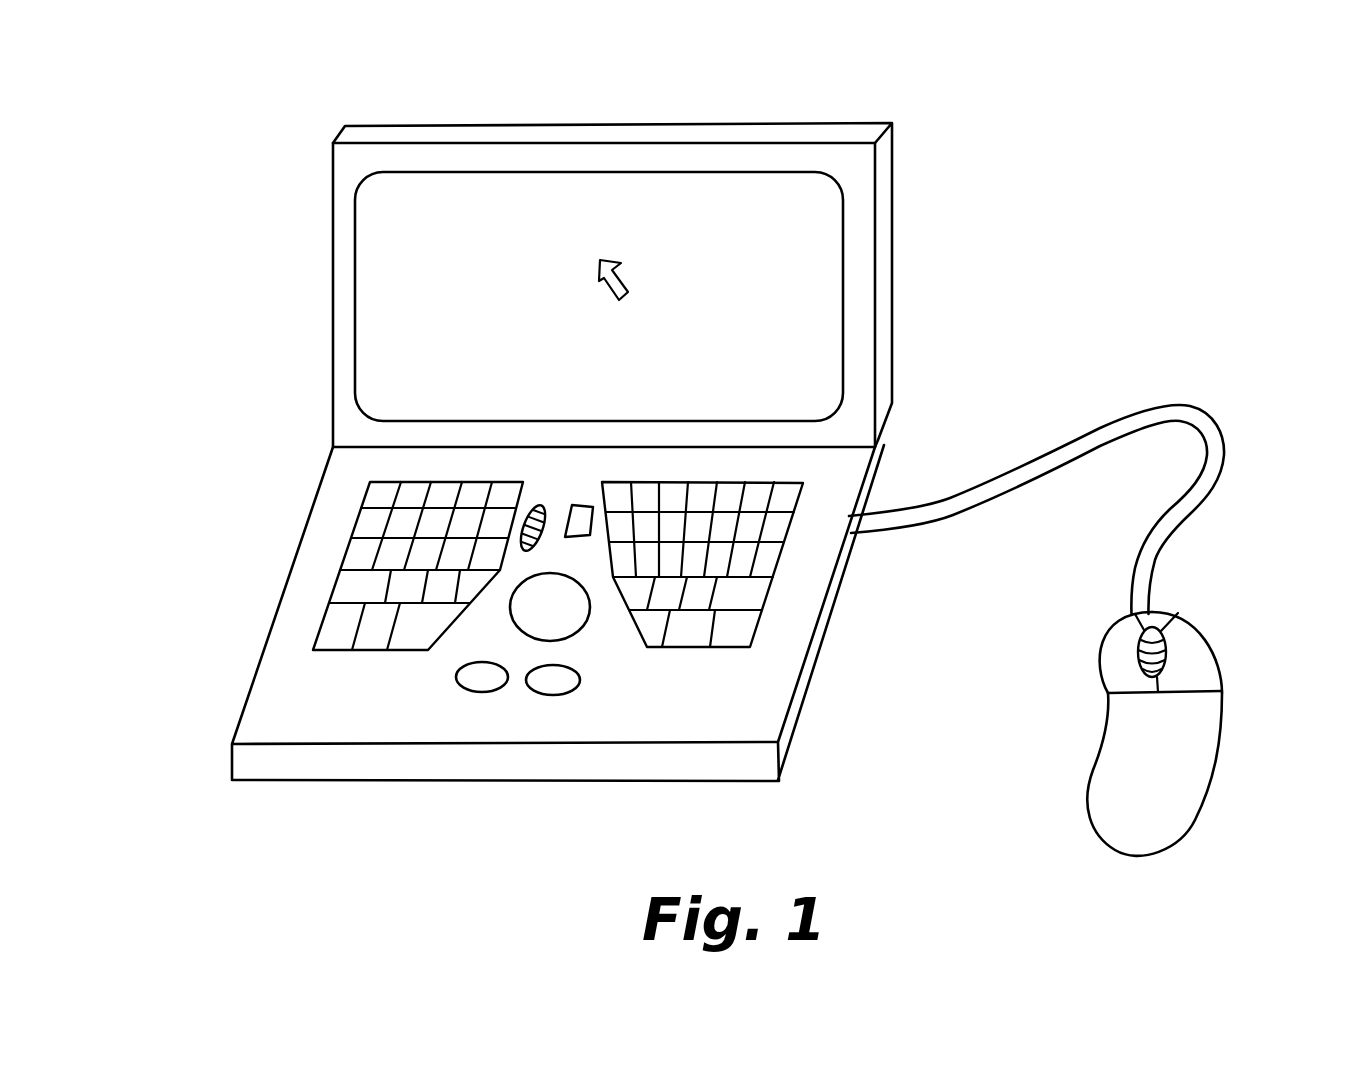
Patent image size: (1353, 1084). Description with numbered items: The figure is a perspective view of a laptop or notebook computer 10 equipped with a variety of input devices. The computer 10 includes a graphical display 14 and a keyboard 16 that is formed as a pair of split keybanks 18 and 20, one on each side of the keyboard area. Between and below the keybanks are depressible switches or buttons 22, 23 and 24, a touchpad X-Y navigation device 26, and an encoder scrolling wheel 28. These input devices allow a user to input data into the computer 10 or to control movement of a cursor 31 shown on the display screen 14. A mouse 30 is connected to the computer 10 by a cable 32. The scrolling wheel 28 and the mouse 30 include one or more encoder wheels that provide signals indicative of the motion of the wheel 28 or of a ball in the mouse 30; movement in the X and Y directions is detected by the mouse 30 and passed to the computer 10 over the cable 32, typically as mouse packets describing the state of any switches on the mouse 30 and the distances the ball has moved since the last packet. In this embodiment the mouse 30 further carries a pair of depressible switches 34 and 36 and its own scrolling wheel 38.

The computer 10 is at (1015, 269).
The graphical display 14 is at (336, 263).
The keyboard 16 is at (338, 509).
The split keybank 18 is at (337, 584).
The split keybank 20 is at (772, 582).
The depressible switch 22 is at (456, 679).
The depressible switch 23 is at (579, 684).
The depressible switch 24 is at (583, 505).
The touchpad X-Y navigation device 26 is at (512, 618).
The encoder scrolling wheel 28 is at (541, 505).
The mouse 30 is at (1201, 804).
The cursor 31 is at (625, 272).
The cable 32 is at (1112, 421).
The depressible switch 34 is at (1113, 658).
The depressible switch 36 is at (1185, 655).
The scrolling wheel 38 is at (1178, 613).